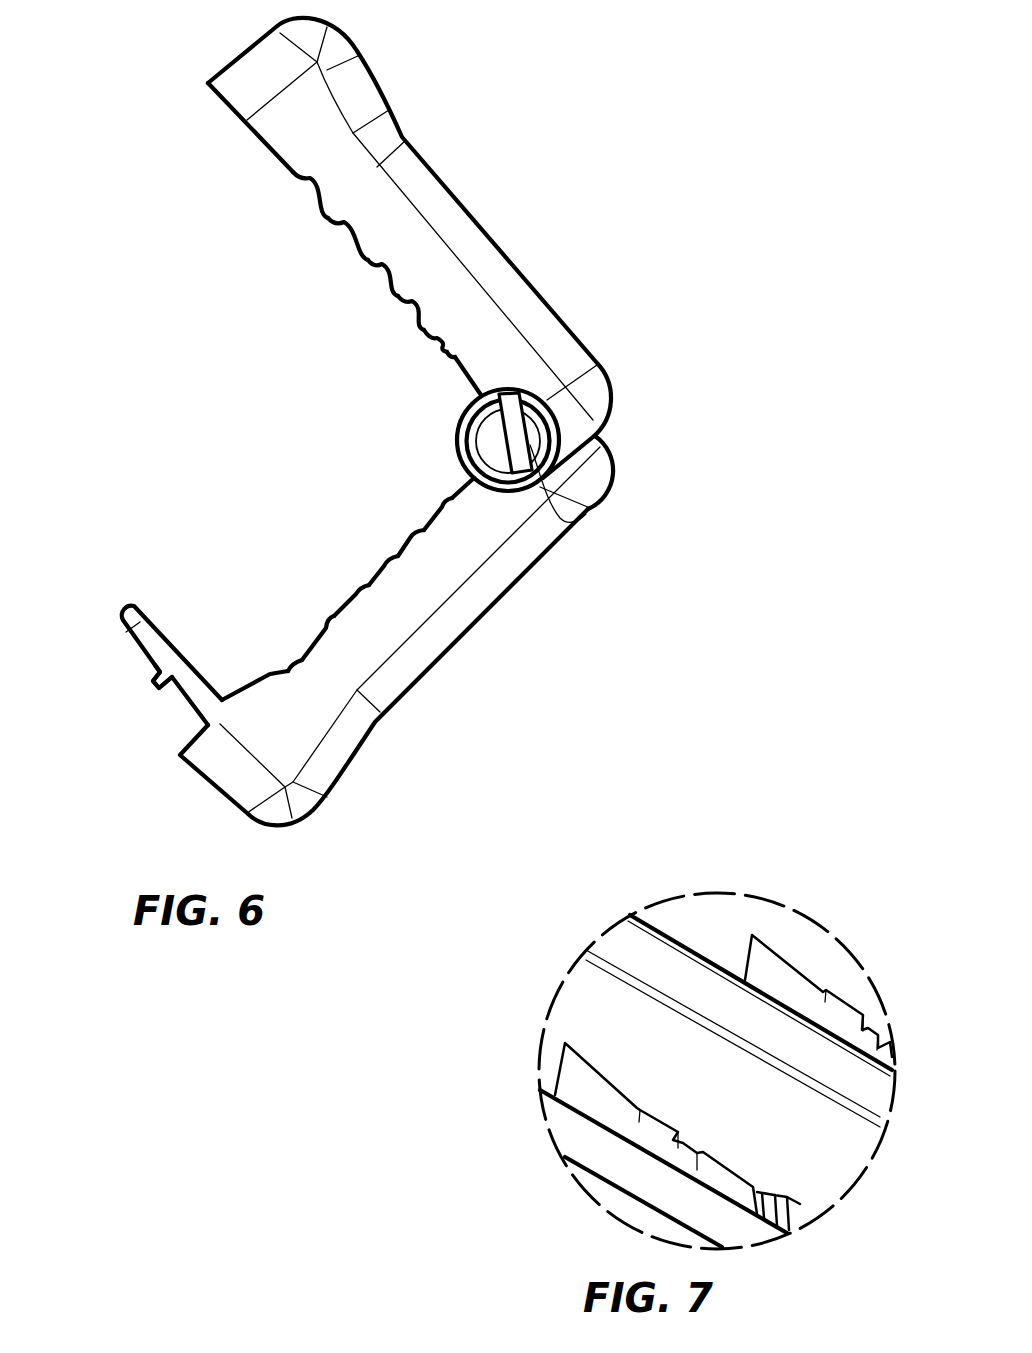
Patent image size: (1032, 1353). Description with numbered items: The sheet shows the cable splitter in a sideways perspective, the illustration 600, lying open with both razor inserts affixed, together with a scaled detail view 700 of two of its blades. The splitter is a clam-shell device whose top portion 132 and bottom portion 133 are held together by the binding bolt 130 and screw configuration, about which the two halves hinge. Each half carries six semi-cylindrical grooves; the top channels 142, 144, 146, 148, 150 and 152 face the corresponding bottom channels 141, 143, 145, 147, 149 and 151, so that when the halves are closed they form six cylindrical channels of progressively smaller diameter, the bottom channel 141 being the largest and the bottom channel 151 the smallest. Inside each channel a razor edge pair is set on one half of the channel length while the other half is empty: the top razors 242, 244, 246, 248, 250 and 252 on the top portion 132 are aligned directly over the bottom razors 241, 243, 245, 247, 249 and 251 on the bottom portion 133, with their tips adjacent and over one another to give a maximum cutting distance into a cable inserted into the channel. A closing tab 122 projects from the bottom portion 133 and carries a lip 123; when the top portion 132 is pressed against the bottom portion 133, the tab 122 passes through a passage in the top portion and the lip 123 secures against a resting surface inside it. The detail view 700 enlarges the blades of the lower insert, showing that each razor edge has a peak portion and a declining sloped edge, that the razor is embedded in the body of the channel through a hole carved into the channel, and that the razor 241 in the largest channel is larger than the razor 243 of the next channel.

In FIG. 6, the illustration 600 is at (127, 51).
In FIG. 7, the detail view of teeth 700 is at (592, 882).
In FIG. 6, the closing tab 122 is at (128, 633).
In FIG. 6, the lip 123 is at (154, 690).
In FIG. 6, the binding bolt 130 is at (576, 532).
In FIG. 6, the top portion 132 is at (573, 358).
In FIG. 6, the bottom portion 133 is at (592, 487).
In FIG. 6, the bottom channel 141 is at (300, 667).
In FIG. 6, the top channel 142 is at (310, 178).
In FIG. 6, the bottom channel 143 is at (333, 624).
In FIG. 6, the top channel 144 is at (344, 222).
In FIG. 6, the bottom channel 145 is at (363, 590).
In FIG. 6, the top channel 146 is at (382, 264).
In FIG. 6, the bottom channel 147 is at (397, 562).
In FIG. 6, the top channel 148 is at (412, 301).
In FIG. 6, the bottom channel 149 is at (423, 538).
In FIG. 6, the top channel 150 is at (437, 338).
In FIG. 6, the bottom channel 151 is at (453, 503).
In FIG. 6, the top channel 152 is at (455, 357).
In FIG. 6, the bottom razor 241 is at (290, 667).
In FIG. 7, the bottom razor 241 is at (551, 1068).
In FIG. 6, the top razor 242 is at (307, 180).
In FIG. 6, the bottom razor 243 is at (331, 624).
In FIG. 7, the bottom razor 243 is at (770, 947).
In FIG. 6, the top razor 244 is at (332, 220).
In FIG. 6, the bottom razor 245 is at (363, 590).
In FIG. 6, the top razor 246 is at (369, 262).
In FIG. 6, the bottom razor 247 is at (388, 558).
In FIG. 6, the top razor 248 is at (399, 298).
In FIG. 6, the bottom razor 249 is at (415, 535).
In FIG. 6, the top razor 250 is at (425, 333).
In FIG. 6, the bottom razor 251 is at (448, 503).
In FIG. 6, the top razor 252 is at (448, 354).